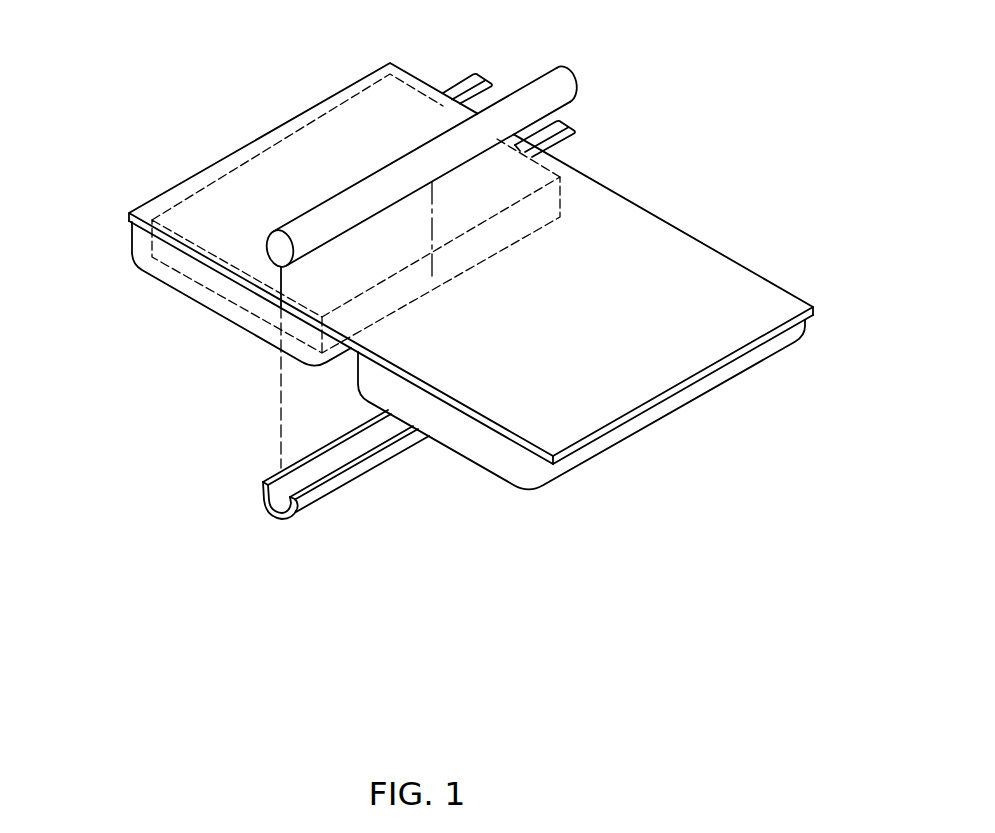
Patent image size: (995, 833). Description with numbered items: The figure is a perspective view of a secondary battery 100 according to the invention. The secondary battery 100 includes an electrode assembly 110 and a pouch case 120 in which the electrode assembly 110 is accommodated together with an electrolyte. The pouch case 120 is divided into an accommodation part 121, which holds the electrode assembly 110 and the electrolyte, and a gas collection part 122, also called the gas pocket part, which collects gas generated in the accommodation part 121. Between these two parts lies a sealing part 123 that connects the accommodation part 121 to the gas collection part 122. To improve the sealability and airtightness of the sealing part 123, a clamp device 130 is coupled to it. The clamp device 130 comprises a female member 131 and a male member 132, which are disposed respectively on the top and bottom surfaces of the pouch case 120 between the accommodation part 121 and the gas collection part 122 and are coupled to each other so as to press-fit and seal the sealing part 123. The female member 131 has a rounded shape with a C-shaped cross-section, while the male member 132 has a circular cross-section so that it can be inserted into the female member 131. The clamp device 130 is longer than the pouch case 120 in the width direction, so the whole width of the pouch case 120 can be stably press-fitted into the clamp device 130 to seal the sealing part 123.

The secondary battery 100 is at (661, 32).
The electrode assembly 110 is at (308, 122).
The pouch case 120 is at (88, 313).
The accommodation part 121 is at (196, 292).
The gas collection part 122 is at (387, 386).
The sealing part 123 is at (336, 338).
The clamp device 130 is at (345, 585).
The female member 131 is at (326, 488).
The male member 132 is at (419, 327).